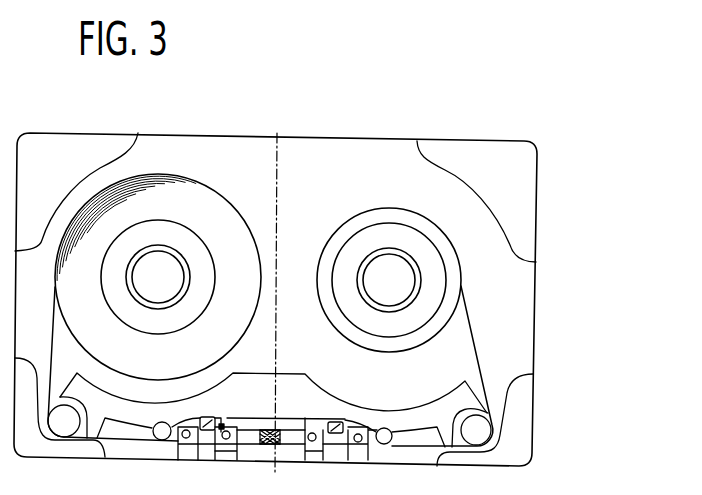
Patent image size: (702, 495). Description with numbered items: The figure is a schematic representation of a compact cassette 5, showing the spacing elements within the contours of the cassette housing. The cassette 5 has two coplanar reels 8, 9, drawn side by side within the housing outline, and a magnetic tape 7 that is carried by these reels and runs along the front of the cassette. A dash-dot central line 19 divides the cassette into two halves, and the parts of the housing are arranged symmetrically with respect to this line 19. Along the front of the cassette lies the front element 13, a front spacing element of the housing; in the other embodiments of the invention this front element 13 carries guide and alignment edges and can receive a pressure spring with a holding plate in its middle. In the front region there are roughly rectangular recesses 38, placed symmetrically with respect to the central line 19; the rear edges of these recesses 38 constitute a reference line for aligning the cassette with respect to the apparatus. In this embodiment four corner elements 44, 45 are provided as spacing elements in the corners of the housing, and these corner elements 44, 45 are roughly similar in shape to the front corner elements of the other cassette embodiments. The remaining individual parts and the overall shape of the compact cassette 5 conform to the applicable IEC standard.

The cassette 5 is at (395, 127).
The central line 19 is at (279, 134).
The reel 8 is at (196, 213).
The reel 9 is at (375, 218).
The magnetic tape 7 is at (479, 360).
The front element 13 is at (293, 391).
The recess 38 is at (215, 418).
The corner element 44 is at (517, 192).
The corner element 45 is at (517, 425).